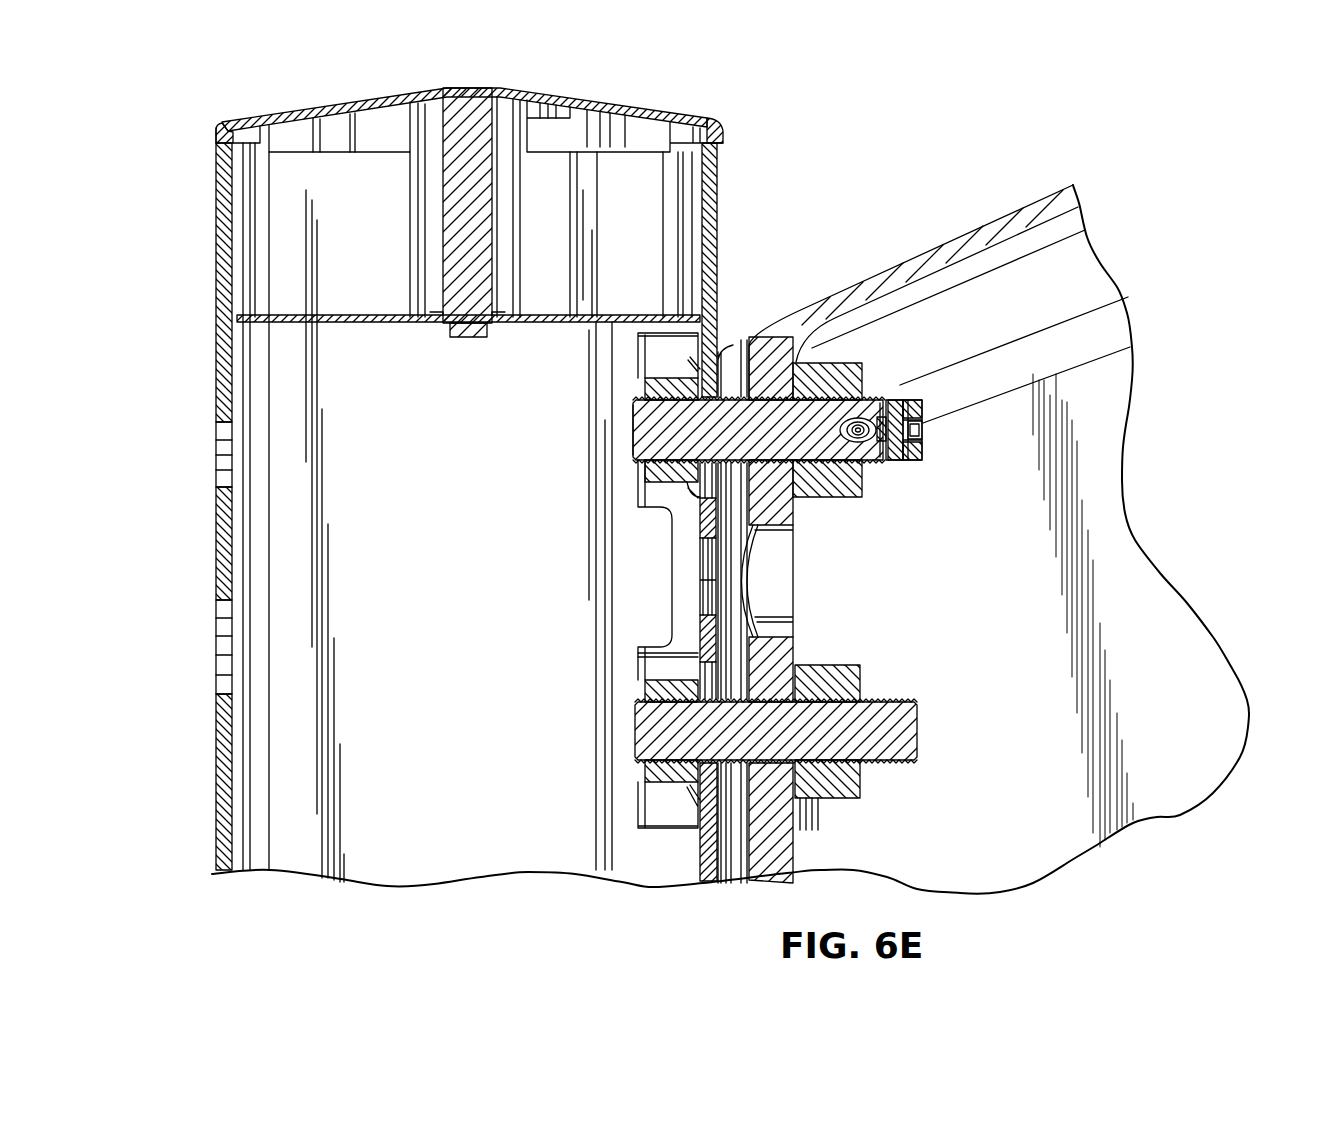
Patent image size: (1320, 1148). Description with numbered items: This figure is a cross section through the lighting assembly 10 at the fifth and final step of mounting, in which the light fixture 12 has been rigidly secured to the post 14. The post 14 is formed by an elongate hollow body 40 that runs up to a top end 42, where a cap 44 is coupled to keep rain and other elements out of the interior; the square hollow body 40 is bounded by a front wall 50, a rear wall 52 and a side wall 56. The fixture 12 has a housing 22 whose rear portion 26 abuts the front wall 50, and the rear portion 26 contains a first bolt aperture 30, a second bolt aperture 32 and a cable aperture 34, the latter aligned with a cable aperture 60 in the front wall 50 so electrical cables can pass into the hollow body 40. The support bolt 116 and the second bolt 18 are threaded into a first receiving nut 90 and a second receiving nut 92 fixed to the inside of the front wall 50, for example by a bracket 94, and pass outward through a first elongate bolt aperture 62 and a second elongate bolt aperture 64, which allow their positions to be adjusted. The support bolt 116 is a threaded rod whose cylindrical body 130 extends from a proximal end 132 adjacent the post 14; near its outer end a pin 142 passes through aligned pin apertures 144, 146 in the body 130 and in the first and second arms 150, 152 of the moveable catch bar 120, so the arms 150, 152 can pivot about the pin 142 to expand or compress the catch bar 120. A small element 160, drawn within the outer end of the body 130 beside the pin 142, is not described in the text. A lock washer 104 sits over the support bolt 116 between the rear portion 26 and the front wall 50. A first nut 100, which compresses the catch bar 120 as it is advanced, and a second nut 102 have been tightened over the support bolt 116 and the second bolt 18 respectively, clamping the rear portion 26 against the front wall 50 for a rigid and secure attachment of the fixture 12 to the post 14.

The lighting assembly 10 is at (948, 100).
The light fixture 12 is at (1027, 186).
The post 14 is at (206, 203).
The second bolt 18 is at (893, 769).
The housing 22 is at (943, 238).
The rear portion 26 is at (733, 518).
The first bolt aperture 30 is at (787, 380).
The second bolt aperture 32 is at (810, 697).
The cable aperture 34 is at (768, 585).
The hollow body 40 is at (222, 278).
The top end 42 is at (236, 122).
The cap 44 is at (328, 112).
The front wall 50 is at (719, 232).
The rear wall 52 is at (220, 746).
The second side wall 56 is at (485, 609).
The cable aperture 60 is at (710, 575).
The first elongate bolt aperture 62 is at (705, 494).
The second elongate bolt aperture 64 is at (705, 672).
The first threaded receiving nut 90 is at (645, 386).
The second threaded receiving nut 92 is at (645, 773).
The bracket 94 is at (645, 806).
The first threaded nut 100 is at (842, 497).
The second threaded nut 102 is at (838, 799).
The lock washer 104 is at (722, 392).
The support bolt 116 is at (873, 396).
The moveable catch bar 120 is at (927, 438).
The cylindrical body 130 is at (727, 445).
The proximal end 132 is at (634, 432).
The pin 142 is at (905, 404).
The pin aperture 144 is at (895, 400).
The pin aperture 146 is at (911, 404).
The first arm 150 is at (923, 424).
The second arm 152 is at (914, 456).
The seal 160 is at (862, 440).